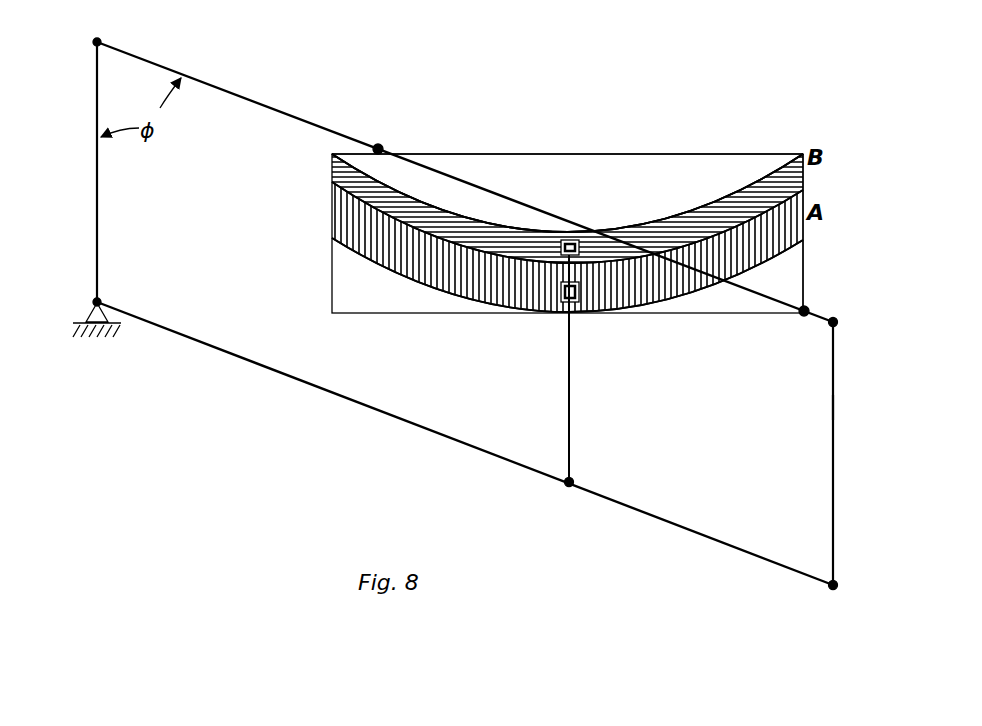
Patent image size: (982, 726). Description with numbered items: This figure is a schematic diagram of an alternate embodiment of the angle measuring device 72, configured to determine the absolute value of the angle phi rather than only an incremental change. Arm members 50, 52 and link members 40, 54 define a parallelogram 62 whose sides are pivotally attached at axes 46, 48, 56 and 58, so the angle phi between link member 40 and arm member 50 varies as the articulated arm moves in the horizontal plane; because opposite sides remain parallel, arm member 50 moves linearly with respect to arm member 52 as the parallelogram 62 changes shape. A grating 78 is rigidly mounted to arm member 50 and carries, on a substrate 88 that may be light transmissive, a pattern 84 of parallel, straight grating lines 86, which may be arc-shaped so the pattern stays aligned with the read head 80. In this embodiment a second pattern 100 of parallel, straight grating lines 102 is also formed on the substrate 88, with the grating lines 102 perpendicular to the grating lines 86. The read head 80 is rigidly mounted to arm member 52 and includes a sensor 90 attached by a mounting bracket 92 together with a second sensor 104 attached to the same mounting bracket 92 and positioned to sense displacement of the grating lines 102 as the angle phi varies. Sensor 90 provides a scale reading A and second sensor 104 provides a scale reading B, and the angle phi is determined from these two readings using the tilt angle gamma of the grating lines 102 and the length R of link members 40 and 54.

The link member 40 is at (97, 203).
The pivot axis 46 is at (96, 38).
The pivot axis 48 is at (97, 302).
The arm member 50 is at (266, 103).
The arm member 52 is at (312, 390).
The link member 54 is at (834, 470).
The pivot axis 56 is at (836, 323).
The pivot axis 58 is at (836, 585).
The parallelogram 62 is at (836, 407).
The angle measuring device 72 is at (654, 152).
The grating 78 is at (718, 152).
The read head 80 is at (532, 330).
The pattern 84 is at (332, 216).
The grating lines 86 is at (480, 292).
The substrate 88 is at (805, 265).
The sensor 90 is at (581, 302).
The mounting bracket 92 is at (571, 397).
The second pattern 100 is at (332, 160).
The grating lines 102 is at (455, 220).
The second sensor 104 is at (577, 239).